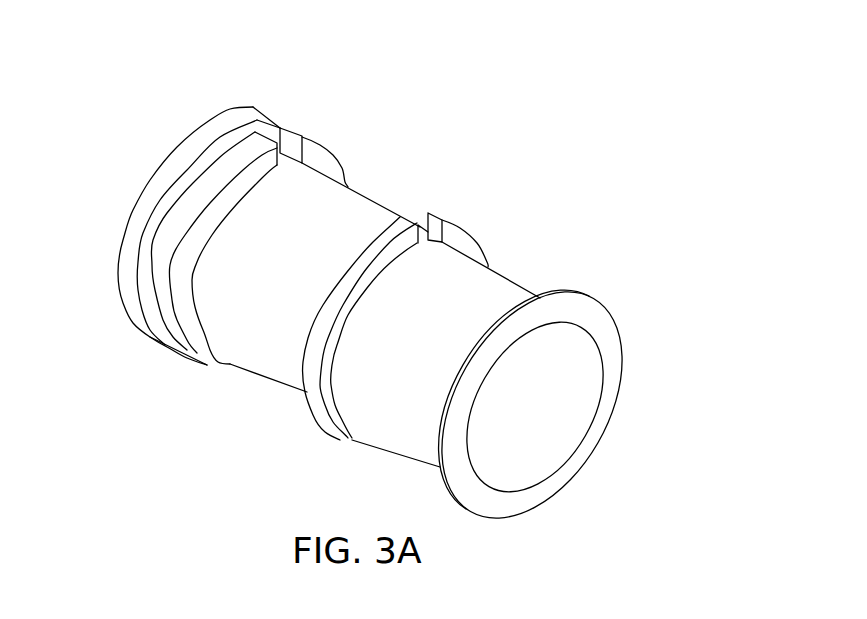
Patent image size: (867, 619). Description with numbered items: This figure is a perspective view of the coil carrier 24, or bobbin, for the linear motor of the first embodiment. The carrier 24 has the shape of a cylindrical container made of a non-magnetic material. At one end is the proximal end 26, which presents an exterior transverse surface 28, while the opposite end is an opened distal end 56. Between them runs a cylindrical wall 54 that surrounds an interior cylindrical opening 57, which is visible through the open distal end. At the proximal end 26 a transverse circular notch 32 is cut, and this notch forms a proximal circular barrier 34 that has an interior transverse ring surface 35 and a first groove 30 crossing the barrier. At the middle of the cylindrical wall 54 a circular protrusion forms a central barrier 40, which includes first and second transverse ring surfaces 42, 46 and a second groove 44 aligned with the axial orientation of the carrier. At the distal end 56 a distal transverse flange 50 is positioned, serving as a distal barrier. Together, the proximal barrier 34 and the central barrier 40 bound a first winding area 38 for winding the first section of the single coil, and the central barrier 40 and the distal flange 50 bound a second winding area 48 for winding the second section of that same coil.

The coil carrier 24 is at (537, 161).
The proximal end 26 is at (208, 108).
The exterior transverse surface 28 is at (147, 178).
The first groove 30 is at (287, 145).
The transverse circular notch 32 is at (153, 238).
The proximal circular barrier 34 is at (185, 211).
The interior transverse ring surface 35 is at (187, 265).
The first winding area 38 is at (375, 160).
The central barrier 40 is at (303, 363).
The first transverse ring surface 42 is at (307, 420).
The second groove 44 is at (421, 217).
The second transverse ring surface 46 is at (333, 412).
The second winding area 48 is at (580, 272).
The distal transverse flange 50 is at (605, 347).
The cylindrical wall 54 is at (282, 262).
The opened distal end 56 is at (674, 380).
The interior cylindrical opening 57 is at (543, 428).